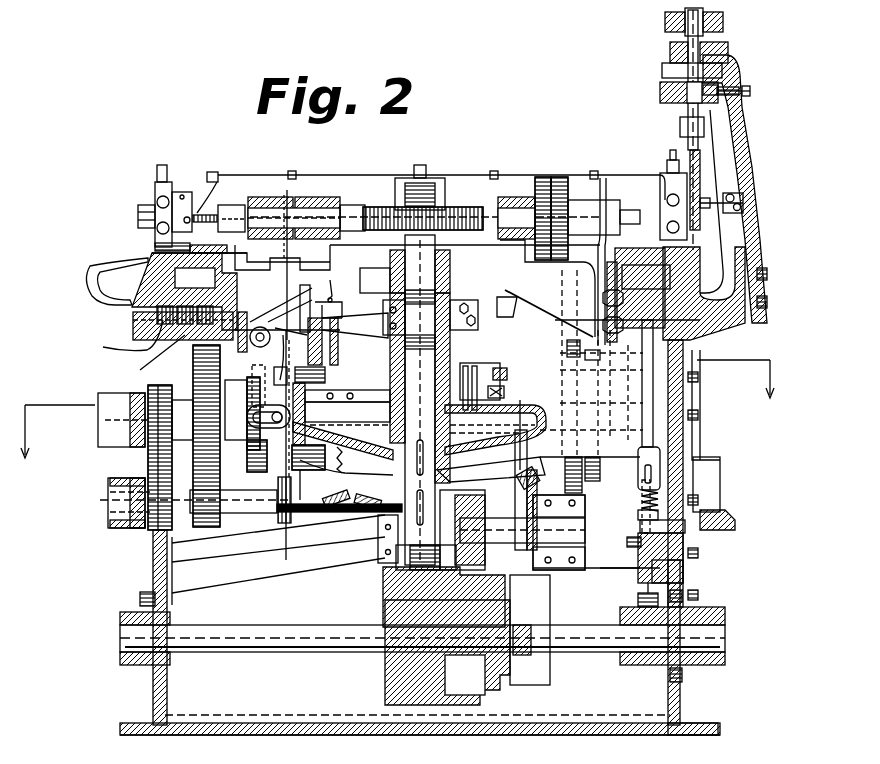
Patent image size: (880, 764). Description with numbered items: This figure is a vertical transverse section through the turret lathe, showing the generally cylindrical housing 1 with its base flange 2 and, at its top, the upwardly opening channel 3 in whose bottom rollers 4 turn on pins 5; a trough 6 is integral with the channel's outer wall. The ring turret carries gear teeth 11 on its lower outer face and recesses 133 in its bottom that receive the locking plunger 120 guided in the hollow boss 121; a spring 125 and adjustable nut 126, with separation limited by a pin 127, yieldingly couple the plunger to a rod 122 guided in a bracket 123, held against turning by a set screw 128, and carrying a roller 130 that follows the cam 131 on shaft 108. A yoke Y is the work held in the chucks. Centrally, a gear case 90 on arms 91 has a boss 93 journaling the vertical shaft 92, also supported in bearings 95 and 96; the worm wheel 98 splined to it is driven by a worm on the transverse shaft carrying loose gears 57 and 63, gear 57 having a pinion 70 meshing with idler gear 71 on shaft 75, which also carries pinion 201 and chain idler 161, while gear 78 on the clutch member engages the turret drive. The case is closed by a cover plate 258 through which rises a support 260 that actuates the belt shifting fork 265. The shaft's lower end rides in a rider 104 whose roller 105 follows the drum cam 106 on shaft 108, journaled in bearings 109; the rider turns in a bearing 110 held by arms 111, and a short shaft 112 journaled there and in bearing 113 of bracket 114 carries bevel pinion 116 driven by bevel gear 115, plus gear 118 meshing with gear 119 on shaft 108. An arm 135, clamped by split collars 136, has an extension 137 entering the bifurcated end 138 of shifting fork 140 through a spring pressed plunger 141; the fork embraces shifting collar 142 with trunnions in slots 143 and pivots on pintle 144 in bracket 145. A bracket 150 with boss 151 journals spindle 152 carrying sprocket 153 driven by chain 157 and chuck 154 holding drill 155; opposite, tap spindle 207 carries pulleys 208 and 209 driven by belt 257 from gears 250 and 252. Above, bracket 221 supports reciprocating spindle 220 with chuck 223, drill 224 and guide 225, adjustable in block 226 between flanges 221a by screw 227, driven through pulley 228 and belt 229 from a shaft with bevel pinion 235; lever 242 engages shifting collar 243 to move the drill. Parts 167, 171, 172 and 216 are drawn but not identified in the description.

The housing 1 is at (153, 690).
The base flange 2 is at (700, 720).
The channel 3 is at (398, 398).
The rollers 4 is at (156, 358).
The pins 5 is at (140, 320).
The trough 6 is at (103, 283).
The gear teeth 11 is at (703, 275).
The gear 57 is at (215, 450).
The gear 63 is at (347, 401).
The pinion 70 is at (165, 385).
The idler gear 71 is at (148, 458).
The shaft 75 is at (108, 495).
The gear 78 is at (255, 470).
The gear case 90 is at (491, 472).
The arms 91 is at (318, 466).
The shaft 92 is at (435, 360).
The boss 93 is at (387, 467).
The bearing 95 is at (390, 350).
The bearing 96 is at (390, 275).
The worm gear 98 is at (419, 433).
The rider 104 is at (395, 575).
The roller 105 is at (510, 570).
The drum cam 106 is at (400, 690).
The shaft 108 is at (232, 636).
The bearings 109 is at (170, 612).
The bearing 110 is at (380, 560).
The arms 111 is at (275, 568).
The shaft 112 is at (540, 527).
The bearing 113 is at (575, 570).
The bracket 114 is at (625, 570).
The bevel gear 115 is at (375, 505).
The bevel pinion 116 is at (521, 490).
The gear 118 is at (560, 565).
The gear 119 is at (525, 672).
The plunger 120 is at (650, 390).
The hollow cylindrical boss 121 is at (700, 345).
The rod 122 is at (690, 535).
The bracket 123 is at (652, 565).
The spring 125 is at (660, 500).
The nut 126 is at (638, 513).
The pin 127 is at (655, 478).
The set screw 128 is at (615, 537).
The roller 130 is at (660, 598).
The cam 131 is at (640, 666).
The recesses 133 is at (190, 305).
The arm 135 is at (556, 300).
The split collars 136 is at (358, 300).
The extension 137 is at (348, 339).
The bifurcated end 138 is at (307, 308).
The shifting fork 140 is at (245, 401).
The spring pressed plunger 141 is at (289, 332).
The shifting collar 142 is at (290, 470).
The slots 143 is at (268, 408).
The pintle 144 is at (264, 328).
The bracket 145 is at (281, 302).
The bracket 150 is at (152, 243).
The horizontal cylindrical boss 151 is at (305, 210).
The spindle 152 is at (345, 212).
The sprocket wheel 153 is at (288, 190).
The tool chuck 154 is at (228, 213).
The drill 155 is at (205, 231).
The chain 157 is at (283, 258).
The idler 161 is at (280, 540).
The pin 167 is at (347, 291).
The bar 171 is at (440, 232).
The solenoid 172 is at (440, 192).
The pinion 201 is at (230, 520).
The spindle 207 is at (498, 210).
The pulley 208 is at (560, 178).
The pulley 209 is at (585, 195).
The pipe 216 is at (515, 300).
The spindle 220 is at (688, 42).
The bracket 221 is at (758, 150).
The side flanges 221a is at (662, 95).
The chuck 223 is at (680, 130).
The drill 224 is at (690, 162).
The guide 225 is at (705, 200).
The block 226 is at (668, 100).
The screw 227 is at (752, 93).
The pulley 228 is at (662, 75).
The belt 229 is at (728, 70).
The bevel pinion 235 is at (735, 522).
The lever 242 is at (665, 22).
The shifting collar 243 is at (723, 25).
The gear 250 is at (608, 455).
The gear 252 is at (601, 362).
The belt 257 is at (540, 180).
The cover plate 258 is at (325, 380).
The support 260 is at (530, 380).
The belt shifting fork 265 is at (542, 351).
The yoke Y is at (145, 212).